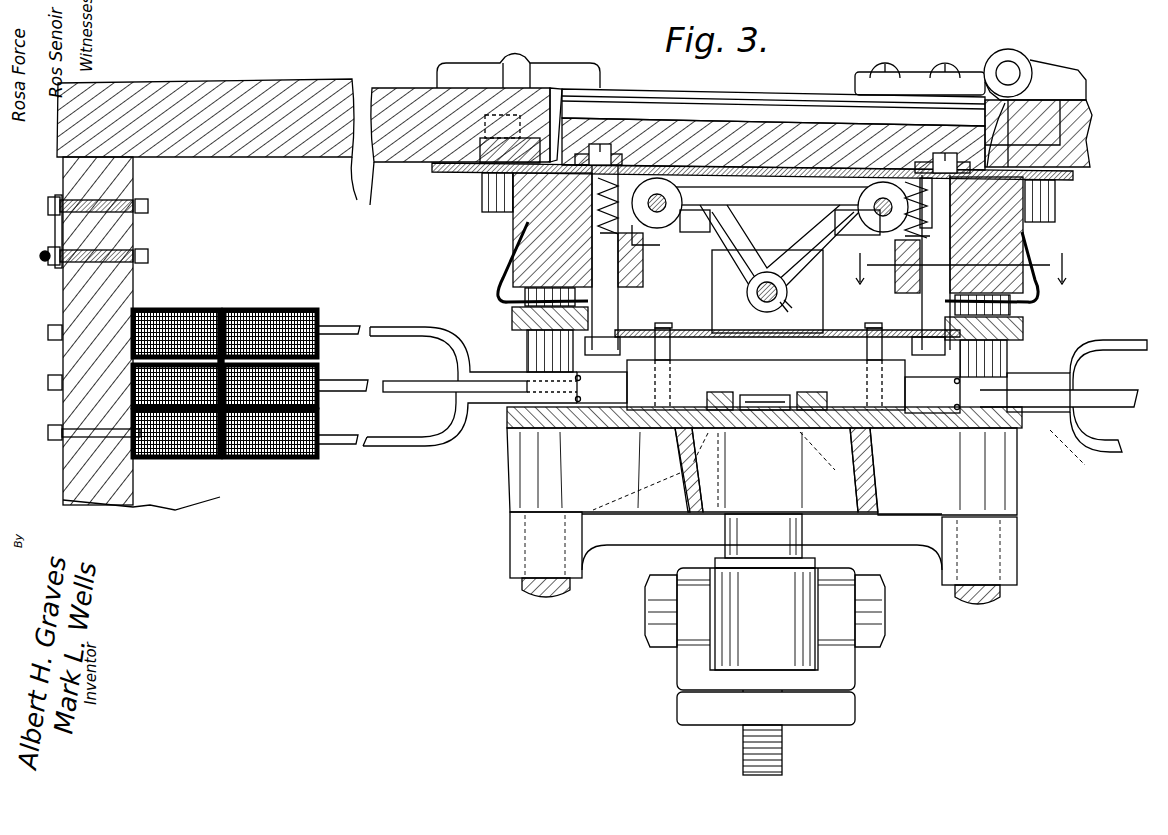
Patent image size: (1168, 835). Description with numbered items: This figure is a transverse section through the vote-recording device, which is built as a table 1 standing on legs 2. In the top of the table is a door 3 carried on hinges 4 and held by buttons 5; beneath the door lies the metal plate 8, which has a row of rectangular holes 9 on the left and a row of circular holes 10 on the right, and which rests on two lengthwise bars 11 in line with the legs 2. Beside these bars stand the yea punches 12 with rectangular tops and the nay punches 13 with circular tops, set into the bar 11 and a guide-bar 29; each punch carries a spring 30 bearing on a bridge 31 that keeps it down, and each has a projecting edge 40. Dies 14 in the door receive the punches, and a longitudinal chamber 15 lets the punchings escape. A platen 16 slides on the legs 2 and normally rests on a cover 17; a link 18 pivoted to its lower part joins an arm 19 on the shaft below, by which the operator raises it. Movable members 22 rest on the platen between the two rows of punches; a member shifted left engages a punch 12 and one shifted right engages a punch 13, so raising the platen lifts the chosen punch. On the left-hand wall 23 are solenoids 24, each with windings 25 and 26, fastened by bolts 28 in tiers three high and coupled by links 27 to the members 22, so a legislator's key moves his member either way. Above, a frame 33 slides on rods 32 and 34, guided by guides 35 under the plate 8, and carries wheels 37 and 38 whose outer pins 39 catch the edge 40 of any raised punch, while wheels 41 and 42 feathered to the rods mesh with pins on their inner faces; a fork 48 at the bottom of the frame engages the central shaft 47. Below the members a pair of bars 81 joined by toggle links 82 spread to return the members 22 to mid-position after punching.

The table 1 is at (285, 97).
The legs 2 is at (527, 593).
The door 3 is at (781, 104).
The hinges 4 is at (1012, 76).
The buttons 5 is at (476, 67).
The metal plate 8 is at (465, 170).
The rectangular holes 9 is at (602, 165).
The circular holes 10 is at (1056, 206).
The bars or beams 11 is at (516, 222).
The punches 12 is at (588, 302).
The punches 13 is at (925, 300).
The dies 14 is at (590, 150).
The longitudinal chamber 15 is at (612, 178).
The platen 16 is at (510, 480).
The cover 17 is at (515, 520).
The link 18 is at (677, 699).
The arm 19 is at (786, 308).
The movable bars or members 22 is at (768, 386).
The left-hand wall 23 is at (68, 353).
The solenoids 24 is at (224, 310).
The winding 25 is at (182, 310).
The winding 26 is at (300, 310).
The links 27 is at (456, 357).
The bolts 28 is at (48, 395).
The guide-bar 29 is at (645, 275).
The spring 30 is at (497, 283).
The bridge 31 is at (513, 318).
The rod 32 is at (662, 214).
The frame 33 is at (770, 197).
The rod 34 is at (870, 228).
The guides 35 is at (783, 239).
The wheel 37 is at (645, 243).
The wheel 38 is at (897, 218).
The pins 39 is at (920, 178).
The projecting edge or part 40 is at (771, 243).
The wheel 41 is at (660, 183).
The wheel 42 is at (878, 190).
The central shaft 47 is at (757, 300).
The fork 48 is at (746, 292).
The bars 81 is at (712, 402).
The toggle links 82 is at (786, 403).